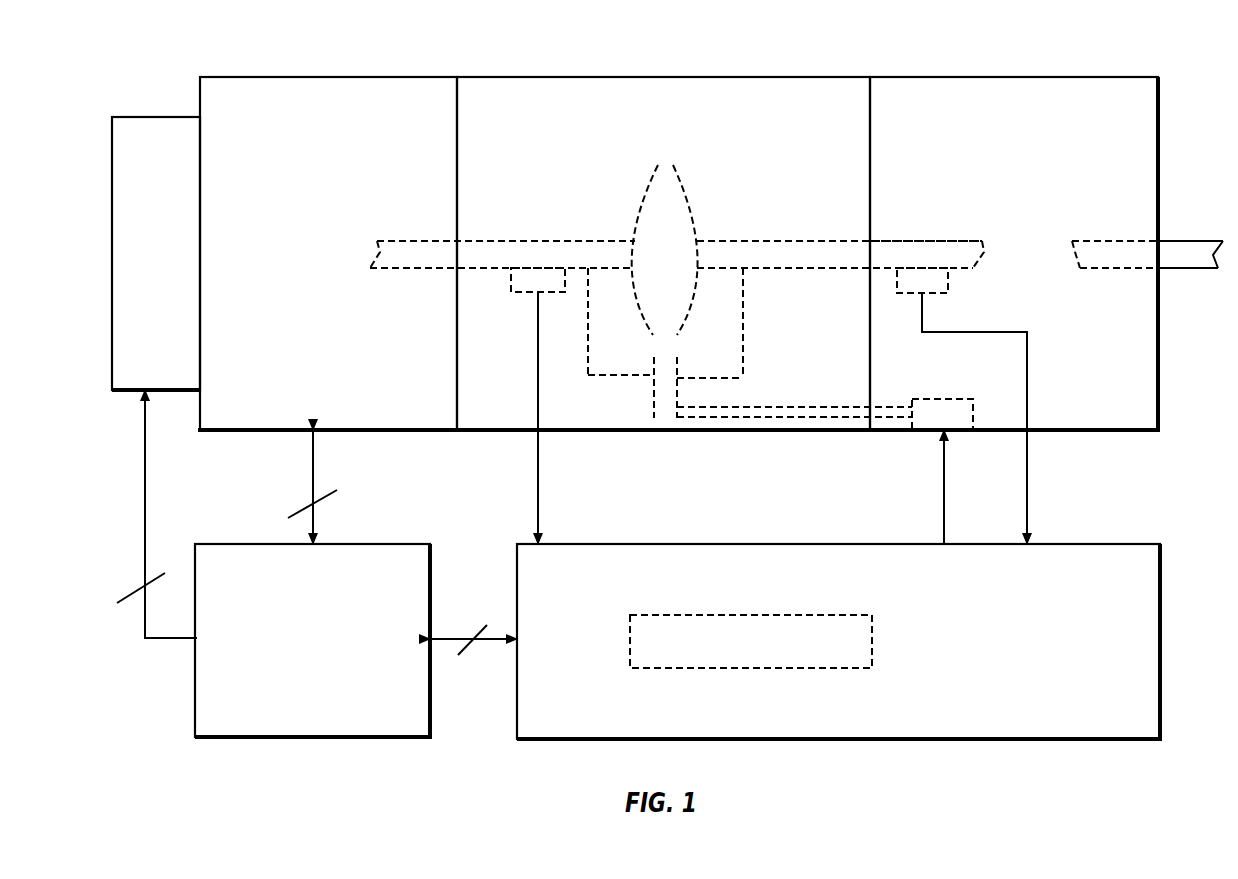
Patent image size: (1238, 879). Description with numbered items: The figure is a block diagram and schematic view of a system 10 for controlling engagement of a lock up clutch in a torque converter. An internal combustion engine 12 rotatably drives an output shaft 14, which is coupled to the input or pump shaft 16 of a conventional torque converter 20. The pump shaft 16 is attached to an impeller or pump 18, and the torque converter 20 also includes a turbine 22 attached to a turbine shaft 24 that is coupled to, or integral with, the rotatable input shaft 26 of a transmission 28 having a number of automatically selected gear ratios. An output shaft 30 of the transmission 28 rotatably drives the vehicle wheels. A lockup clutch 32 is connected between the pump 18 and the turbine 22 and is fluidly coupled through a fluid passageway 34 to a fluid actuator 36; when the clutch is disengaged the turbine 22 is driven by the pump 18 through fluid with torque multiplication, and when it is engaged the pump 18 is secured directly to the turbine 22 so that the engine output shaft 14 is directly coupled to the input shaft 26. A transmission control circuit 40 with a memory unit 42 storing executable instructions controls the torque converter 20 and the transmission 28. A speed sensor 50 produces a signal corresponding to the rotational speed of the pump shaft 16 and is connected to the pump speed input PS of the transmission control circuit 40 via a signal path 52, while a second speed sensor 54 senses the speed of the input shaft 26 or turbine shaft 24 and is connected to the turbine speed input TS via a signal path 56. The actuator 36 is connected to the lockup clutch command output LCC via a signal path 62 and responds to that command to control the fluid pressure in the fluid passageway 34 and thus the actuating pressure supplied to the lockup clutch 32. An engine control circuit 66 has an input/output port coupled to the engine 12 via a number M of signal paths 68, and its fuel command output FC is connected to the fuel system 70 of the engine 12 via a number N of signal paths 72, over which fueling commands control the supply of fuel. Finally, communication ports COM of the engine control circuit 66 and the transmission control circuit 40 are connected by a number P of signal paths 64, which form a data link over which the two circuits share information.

The system 10 is at (152, 742).
The internal combustion engine 12 is at (312, 77).
The output shaft 14 is at (419, 241).
The pump shaft 16 is at (547, 242).
The pump 18 is at (646, 197).
The torque converter 20 is at (612, 432).
The turbine 22 is at (688, 197).
The turbine shaft 24 is at (785, 242).
The input shaft 26 is at (925, 242).
The transmission 28 is at (1160, 125).
The output shaft 30 is at (1185, 242).
The lockup clutch 32 is at (652, 392).
The fluid passageway 34 is at (794, 343).
The fluid actuator 36 is at (947, 399).
The transmission control circuit 40 is at (1162, 642).
The memory unit 42 is at (629, 645).
The speed sensor 50 is at (522, 292).
The signal path 52 is at (535, 455).
The second speed sensor 54 is at (950, 283).
The signal path 56 is at (1030, 485).
The signal path 62 is at (940, 470).
The signal paths 64 is at (487, 648).
The engine control circuit 66 is at (405, 544).
The engine signal path 68 is at (317, 470).
The fuel system 70 is at (112, 347).
The fuel control signal path 72 is at (145, 500).